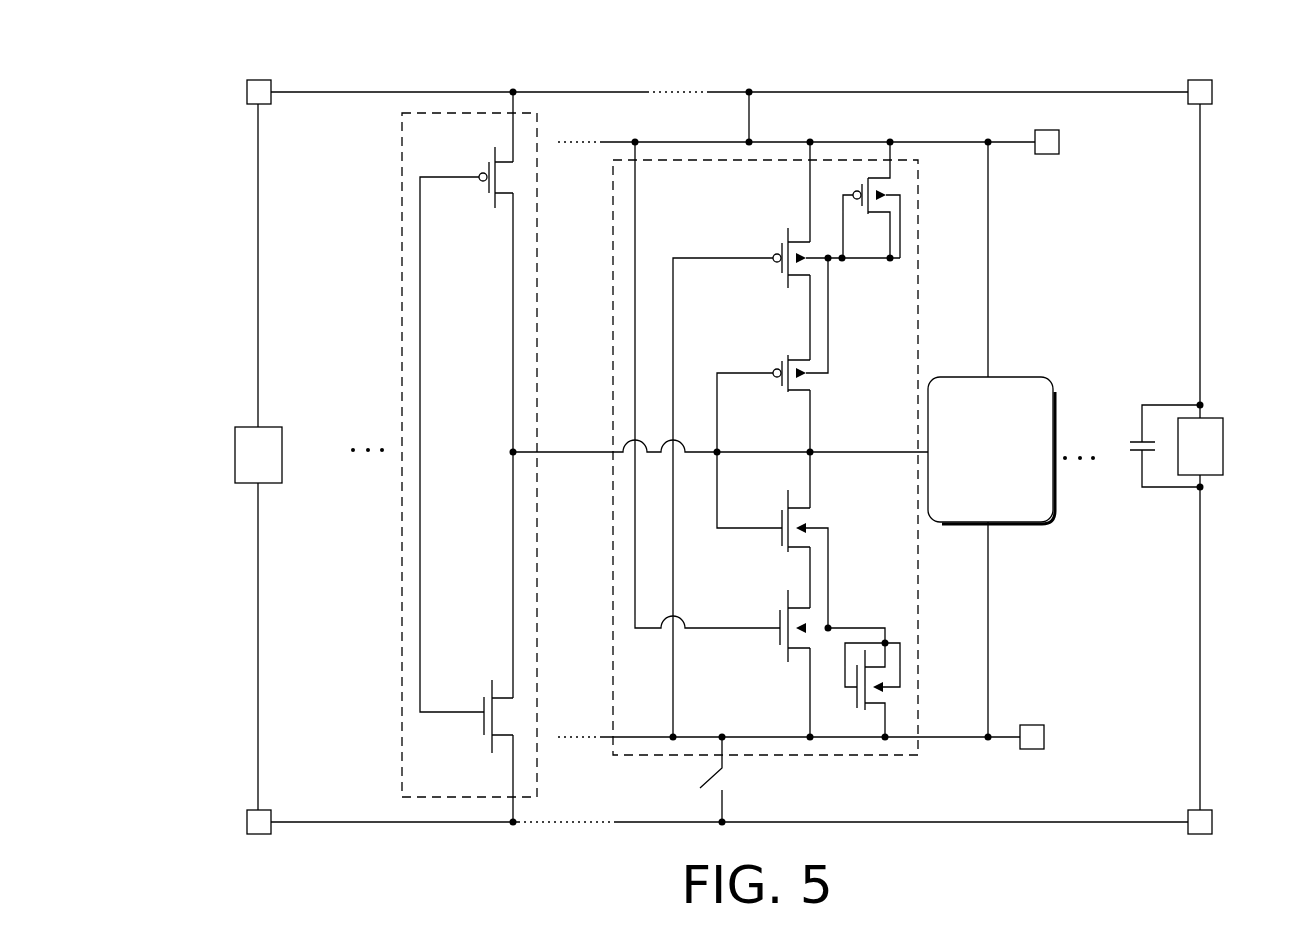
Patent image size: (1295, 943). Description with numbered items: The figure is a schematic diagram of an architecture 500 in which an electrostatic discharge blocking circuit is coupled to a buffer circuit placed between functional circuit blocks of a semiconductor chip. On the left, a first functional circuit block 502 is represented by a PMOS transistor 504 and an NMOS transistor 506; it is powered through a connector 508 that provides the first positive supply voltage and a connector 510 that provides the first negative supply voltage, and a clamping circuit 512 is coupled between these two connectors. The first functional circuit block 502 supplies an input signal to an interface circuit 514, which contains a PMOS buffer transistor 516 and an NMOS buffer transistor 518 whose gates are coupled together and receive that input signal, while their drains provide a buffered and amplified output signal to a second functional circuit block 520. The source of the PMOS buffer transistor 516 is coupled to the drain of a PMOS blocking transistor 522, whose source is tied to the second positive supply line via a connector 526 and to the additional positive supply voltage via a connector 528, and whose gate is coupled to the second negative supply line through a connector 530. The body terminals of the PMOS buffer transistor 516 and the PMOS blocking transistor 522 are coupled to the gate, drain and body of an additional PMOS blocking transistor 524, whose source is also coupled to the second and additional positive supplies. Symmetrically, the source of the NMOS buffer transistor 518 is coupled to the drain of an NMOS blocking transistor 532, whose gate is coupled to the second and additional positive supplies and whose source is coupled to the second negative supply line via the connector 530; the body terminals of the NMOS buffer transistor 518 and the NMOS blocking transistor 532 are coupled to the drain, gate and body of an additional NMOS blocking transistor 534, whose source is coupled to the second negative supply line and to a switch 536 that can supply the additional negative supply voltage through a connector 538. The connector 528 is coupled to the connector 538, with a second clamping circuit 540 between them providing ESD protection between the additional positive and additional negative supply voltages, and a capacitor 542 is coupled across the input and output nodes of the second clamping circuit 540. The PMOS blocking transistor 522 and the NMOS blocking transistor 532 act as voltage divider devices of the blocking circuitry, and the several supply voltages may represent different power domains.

The architecture 500 is at (158, 68).
The first functional circuit block 502 is at (402, 246).
The PMOS transistor 504 is at (495, 150).
The NMOS transistor 506 is at (492, 680).
The connector 508 is at (246, 89).
The connector 510 is at (246, 824).
The clamping circuit 512 is at (274, 426).
The interface circuit 514 is at (615, 246).
The PMOS buffer transistor 516 is at (790, 352).
The NMOS buffer transistor 518 is at (780, 518).
The second functional circuit block 520 is at (991, 450).
The PMOS blocking transistor 522 is at (787, 270).
The additional PMOS blocking transistor 524 is at (870, 168).
The connector 526 is at (1048, 155).
The connector 528 is at (1212, 95).
The connector 530 is at (1042, 750).
The NMOS blocking transistor 532 is at (780, 618).
The additional NMOS blocking transistor 534 is at (865, 707).
The switch 536 is at (722, 808).
The connector 538 is at (1212, 817).
The second clamping circuit 540 is at (1223, 448).
The capacitor 542 is at (1134, 442).